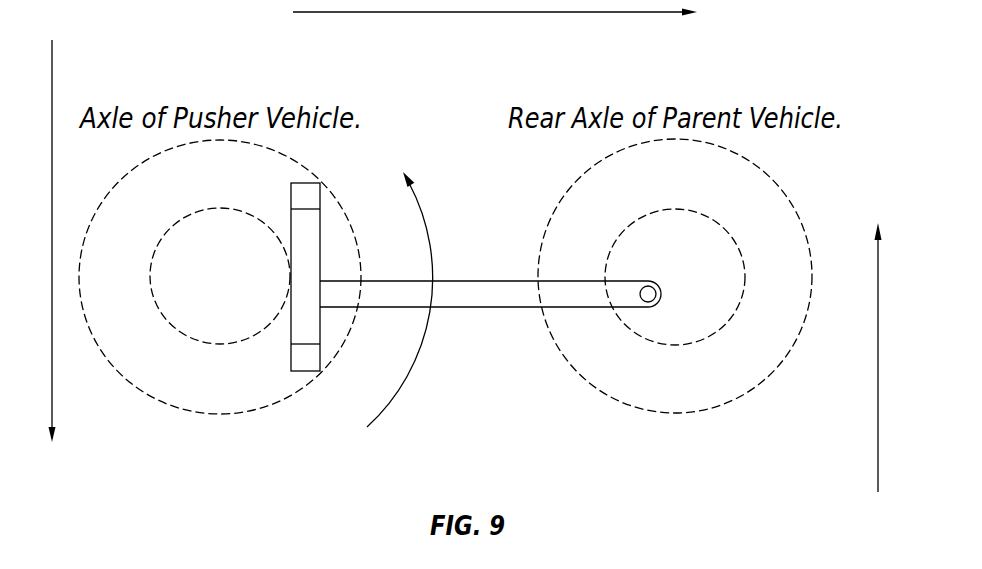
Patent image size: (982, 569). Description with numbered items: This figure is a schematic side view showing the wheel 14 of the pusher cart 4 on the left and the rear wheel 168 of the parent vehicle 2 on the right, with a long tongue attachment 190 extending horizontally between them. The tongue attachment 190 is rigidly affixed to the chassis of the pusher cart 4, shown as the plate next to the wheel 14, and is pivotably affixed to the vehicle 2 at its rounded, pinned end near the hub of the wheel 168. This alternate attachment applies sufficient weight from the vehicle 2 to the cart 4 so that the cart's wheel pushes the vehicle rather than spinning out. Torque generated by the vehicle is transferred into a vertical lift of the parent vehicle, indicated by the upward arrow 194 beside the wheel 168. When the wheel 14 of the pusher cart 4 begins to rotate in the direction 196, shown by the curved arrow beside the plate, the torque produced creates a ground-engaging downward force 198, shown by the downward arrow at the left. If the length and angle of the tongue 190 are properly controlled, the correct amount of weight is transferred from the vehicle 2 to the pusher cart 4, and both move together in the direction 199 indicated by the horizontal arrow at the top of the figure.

The vehicle 2 is at (709, 308).
The pusher cart 4 is at (220, 309).
The wheel 14 is at (176, 406).
The wheel 168 is at (796, 210).
The tongue attachment 190 is at (455, 281).
The vertical lift 194 is at (878, 383).
The direction of rotation 196 is at (385, 403).
The ground-engaging downward force 198 is at (52, 88).
The direction of travel 199 is at (465, 12).